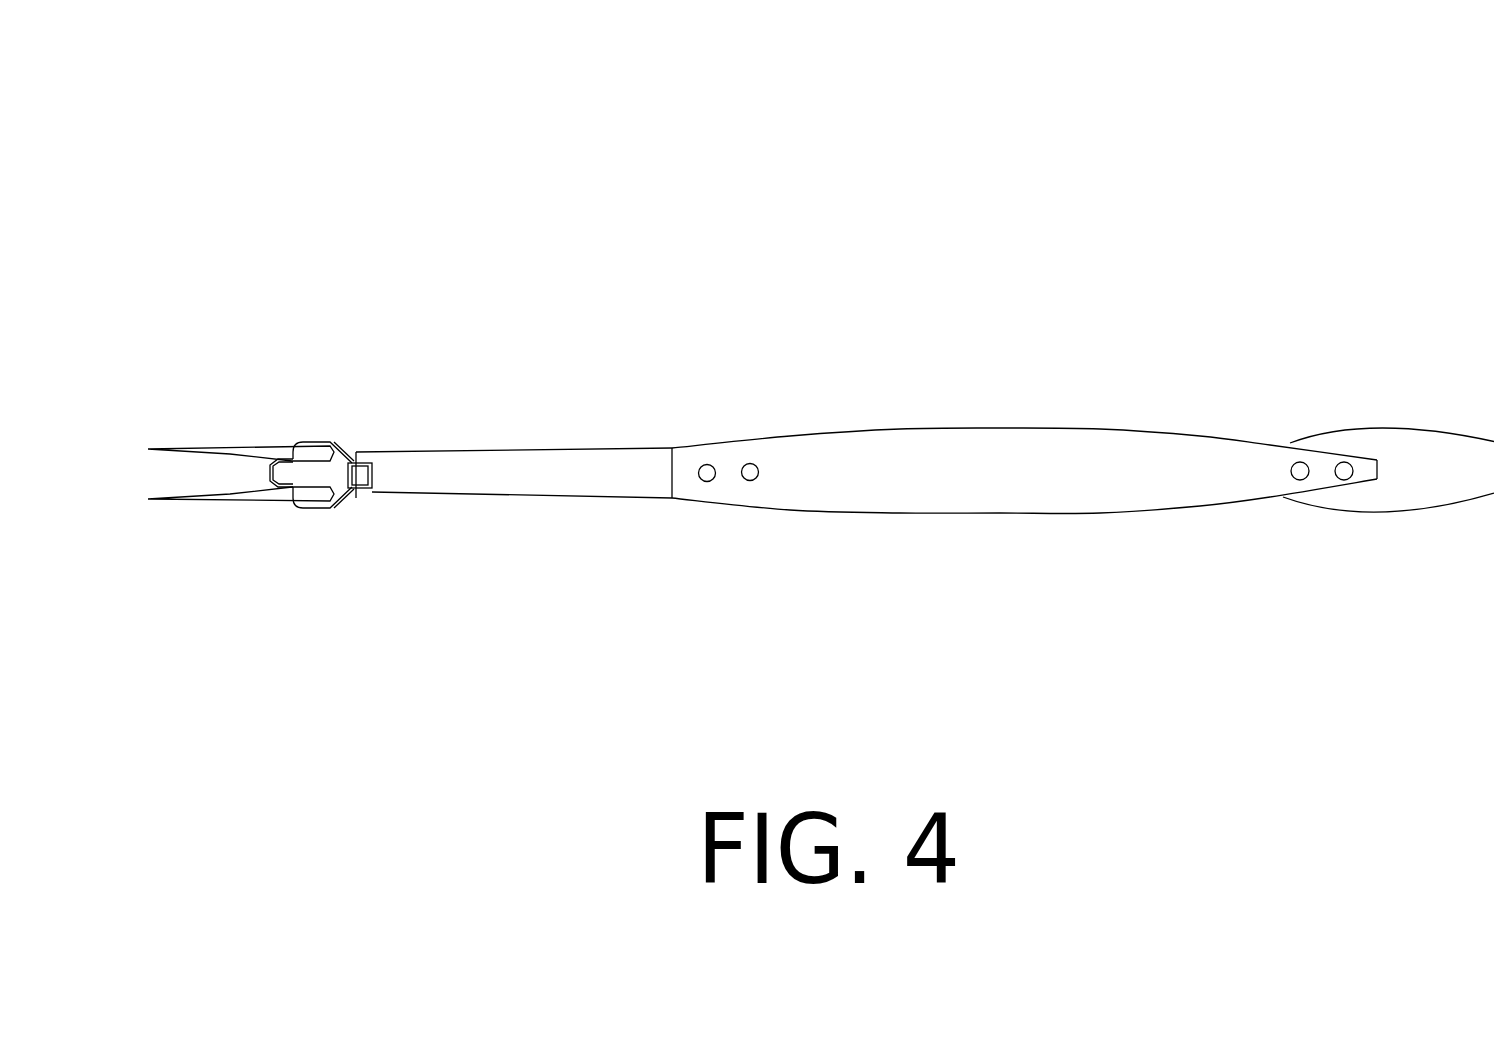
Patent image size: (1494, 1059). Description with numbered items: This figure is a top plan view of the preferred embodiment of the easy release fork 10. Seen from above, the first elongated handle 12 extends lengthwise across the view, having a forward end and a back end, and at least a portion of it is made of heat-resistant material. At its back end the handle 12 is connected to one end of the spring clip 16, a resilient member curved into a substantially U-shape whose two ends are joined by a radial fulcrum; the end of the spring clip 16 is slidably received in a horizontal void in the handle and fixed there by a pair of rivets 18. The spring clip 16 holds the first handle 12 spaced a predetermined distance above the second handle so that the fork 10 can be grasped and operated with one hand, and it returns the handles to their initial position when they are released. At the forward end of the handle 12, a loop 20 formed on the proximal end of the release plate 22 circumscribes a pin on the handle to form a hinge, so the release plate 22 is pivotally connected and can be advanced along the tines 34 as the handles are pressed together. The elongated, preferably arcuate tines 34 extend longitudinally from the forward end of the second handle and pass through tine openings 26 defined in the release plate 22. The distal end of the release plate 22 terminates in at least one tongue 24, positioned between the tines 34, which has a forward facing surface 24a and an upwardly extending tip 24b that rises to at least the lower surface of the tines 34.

The easy release fork 10 is at (826, 177).
The first elongated handle 12 is at (1032, 448).
The spring clip 16 is at (1413, 488).
The rivets 18 is at (1345, 462).
The loop 20 is at (358, 472).
The release plate 22 is at (312, 473).
The tongue 24 is at (264, 494).
The forward facing surface 24a is at (267, 463).
The upwardly extending tip 24b is at (293, 490).
The tine openings 26 is at (340, 496).
The tines 34 is at (187, 450).